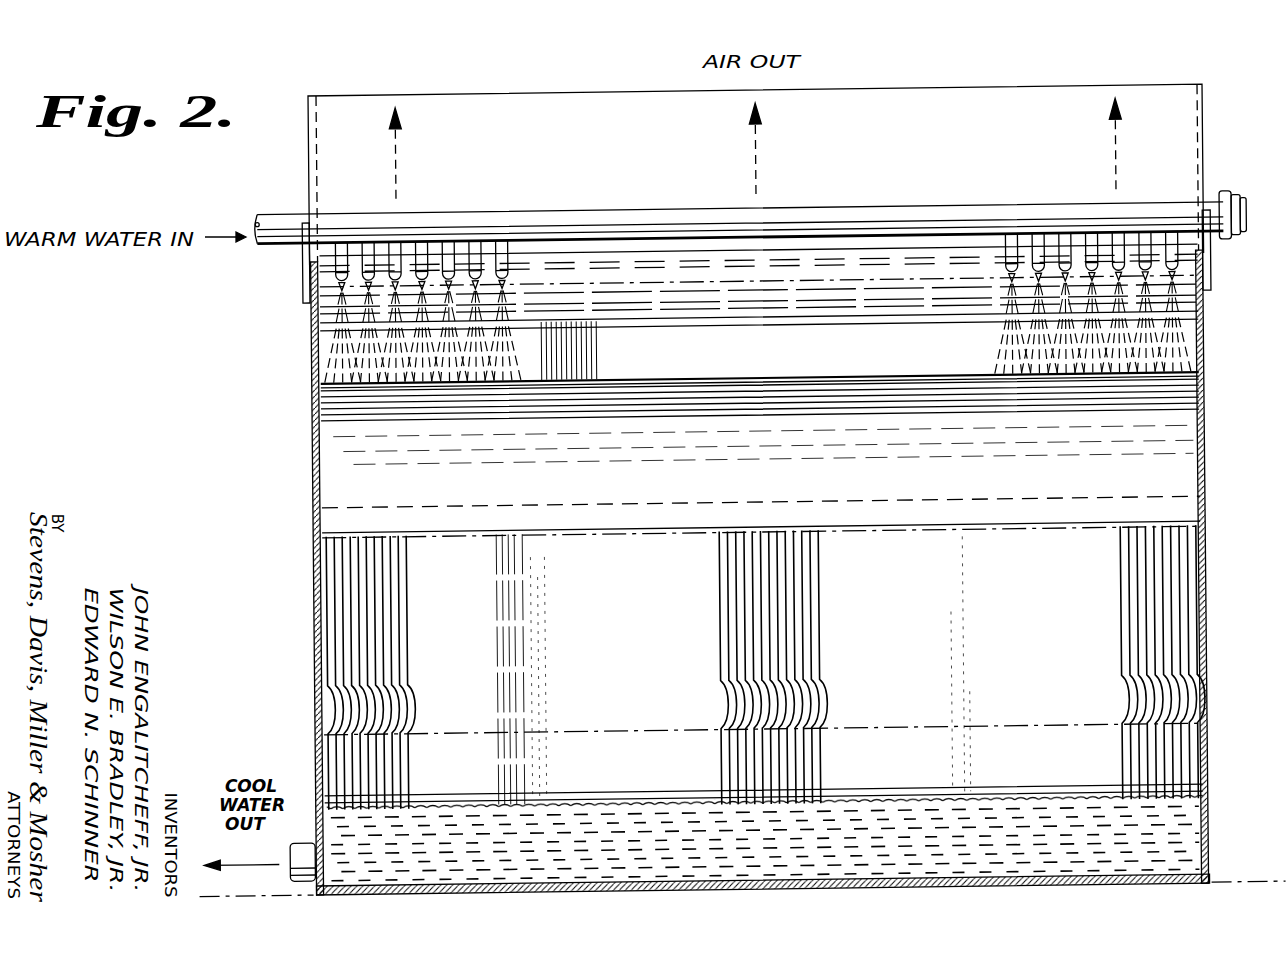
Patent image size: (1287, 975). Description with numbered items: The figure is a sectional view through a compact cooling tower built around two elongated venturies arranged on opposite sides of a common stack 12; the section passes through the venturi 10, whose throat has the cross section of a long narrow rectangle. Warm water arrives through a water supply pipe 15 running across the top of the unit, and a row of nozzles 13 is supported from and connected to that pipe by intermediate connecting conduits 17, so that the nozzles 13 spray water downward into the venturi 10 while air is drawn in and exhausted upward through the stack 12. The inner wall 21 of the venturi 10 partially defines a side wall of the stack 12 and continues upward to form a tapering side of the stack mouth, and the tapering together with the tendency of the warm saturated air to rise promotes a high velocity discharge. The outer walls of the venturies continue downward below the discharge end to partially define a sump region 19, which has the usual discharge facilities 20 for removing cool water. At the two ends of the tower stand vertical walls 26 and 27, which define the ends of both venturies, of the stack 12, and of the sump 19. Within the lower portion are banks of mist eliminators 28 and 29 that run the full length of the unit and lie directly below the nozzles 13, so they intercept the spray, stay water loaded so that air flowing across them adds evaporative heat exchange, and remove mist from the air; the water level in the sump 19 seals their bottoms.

The venturi 10 is at (805, 293).
The stack 12 is at (526, 107).
The nozzles 13 is at (506, 277).
The water supply pipe 15 is at (631, 212).
The intermediate connecting conduits 17 is at (477, 243).
The sump region 19 is at (592, 818).
The discharge facilities 20 is at (290, 880).
The inner wall 21 is at (793, 450).
The vertical wall 26 is at (1208, 440).
The vertical wall 27 is at (312, 443).
The mist eliminators 28 is at (720, 611).
The mist eliminators 29 is at (737, 762).